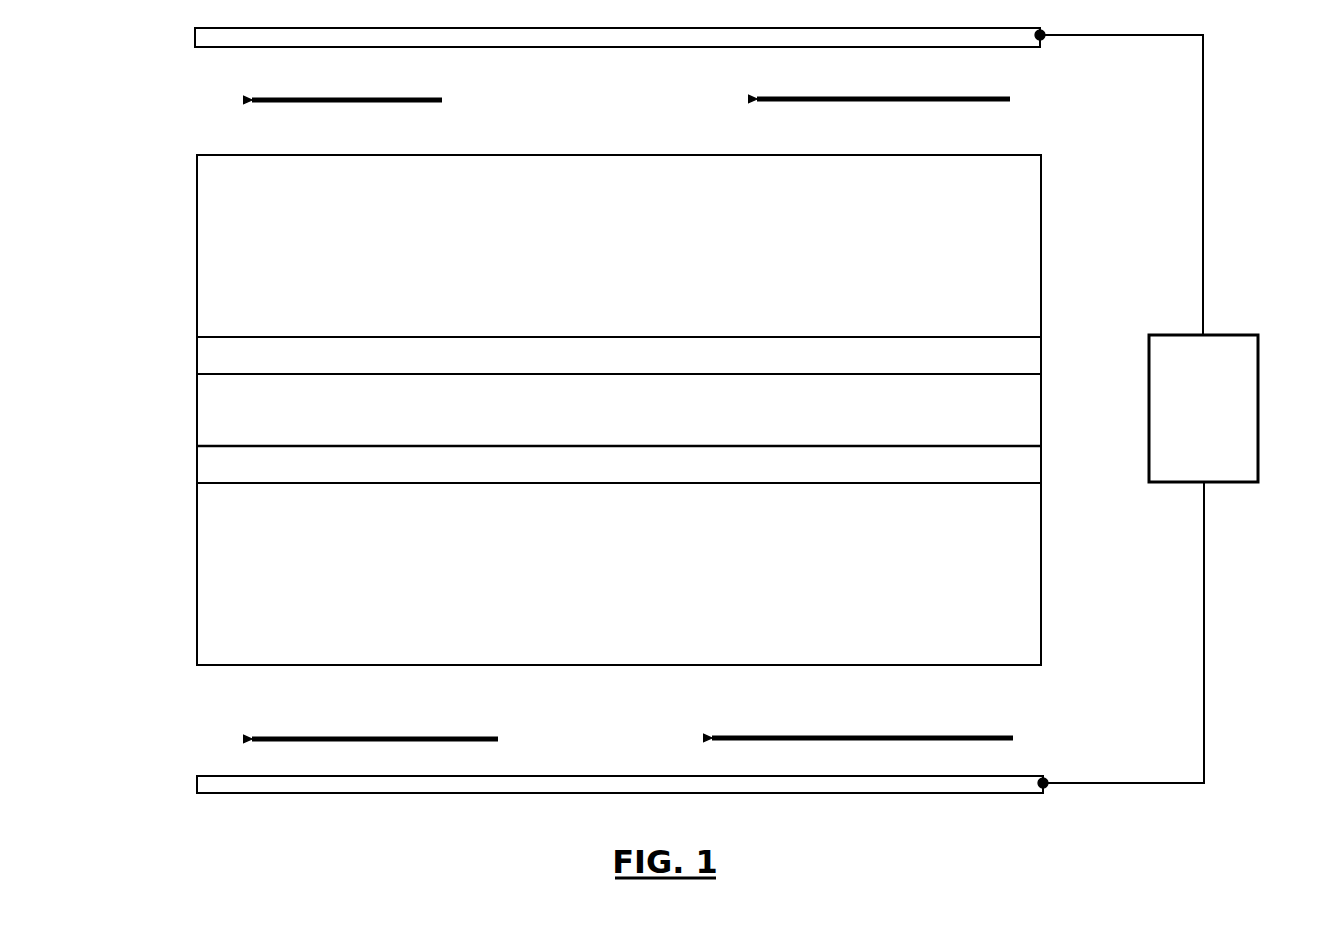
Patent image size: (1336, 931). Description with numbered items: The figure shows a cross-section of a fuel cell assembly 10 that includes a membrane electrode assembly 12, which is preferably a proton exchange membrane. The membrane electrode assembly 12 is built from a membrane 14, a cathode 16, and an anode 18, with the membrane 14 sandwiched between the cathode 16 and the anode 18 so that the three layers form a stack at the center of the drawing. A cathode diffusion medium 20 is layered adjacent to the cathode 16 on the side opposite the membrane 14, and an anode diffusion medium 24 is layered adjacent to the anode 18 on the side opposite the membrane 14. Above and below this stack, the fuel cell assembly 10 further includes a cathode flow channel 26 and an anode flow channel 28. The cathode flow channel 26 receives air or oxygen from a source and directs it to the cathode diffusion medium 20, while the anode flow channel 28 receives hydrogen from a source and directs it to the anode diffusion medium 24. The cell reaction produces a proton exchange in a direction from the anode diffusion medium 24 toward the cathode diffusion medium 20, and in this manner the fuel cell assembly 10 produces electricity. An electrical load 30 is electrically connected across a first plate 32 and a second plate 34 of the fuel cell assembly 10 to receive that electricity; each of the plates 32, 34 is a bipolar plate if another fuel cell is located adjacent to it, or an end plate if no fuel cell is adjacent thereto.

The fuel cell assembly 10 is at (1255, 152).
The membrane electrode assembly 12 is at (574, 410).
The membrane 14 is at (684, 416).
The cathode 16 is at (684, 365).
The anode 18 is at (684, 473).
The cathode diffusion medium 20 is at (684, 255).
The anode diffusion medium 24 is at (684, 568).
The cathode flow channel 26 is at (327, 84).
The anode flow channel 28 is at (356, 721).
The electrical load 30 is at (1149, 407).
The first plate 32 is at (1003, 46).
The second plate 34 is at (712, 776).